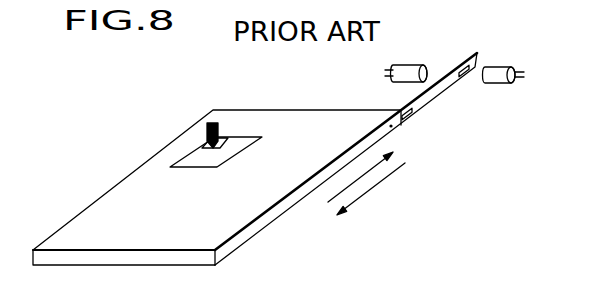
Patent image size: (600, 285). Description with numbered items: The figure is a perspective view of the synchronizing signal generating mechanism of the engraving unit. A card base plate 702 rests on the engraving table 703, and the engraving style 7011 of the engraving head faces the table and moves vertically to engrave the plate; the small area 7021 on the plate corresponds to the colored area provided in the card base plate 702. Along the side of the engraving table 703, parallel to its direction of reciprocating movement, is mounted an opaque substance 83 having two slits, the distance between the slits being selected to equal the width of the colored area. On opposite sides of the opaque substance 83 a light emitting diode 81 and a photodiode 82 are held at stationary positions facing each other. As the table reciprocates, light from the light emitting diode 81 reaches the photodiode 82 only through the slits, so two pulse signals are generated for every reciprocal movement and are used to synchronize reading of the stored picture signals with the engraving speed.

The engraving table 703 is at (328, 122).
The card base plate 702 is at (199, 159).
The engraving style 7011 is at (215, 125).
The electrode 7021 is at (221, 140).
The opaque substance 83 is at (433, 93).
The photodiode 82 is at (405, 67).
The light emitting diode 81 is at (497, 69).